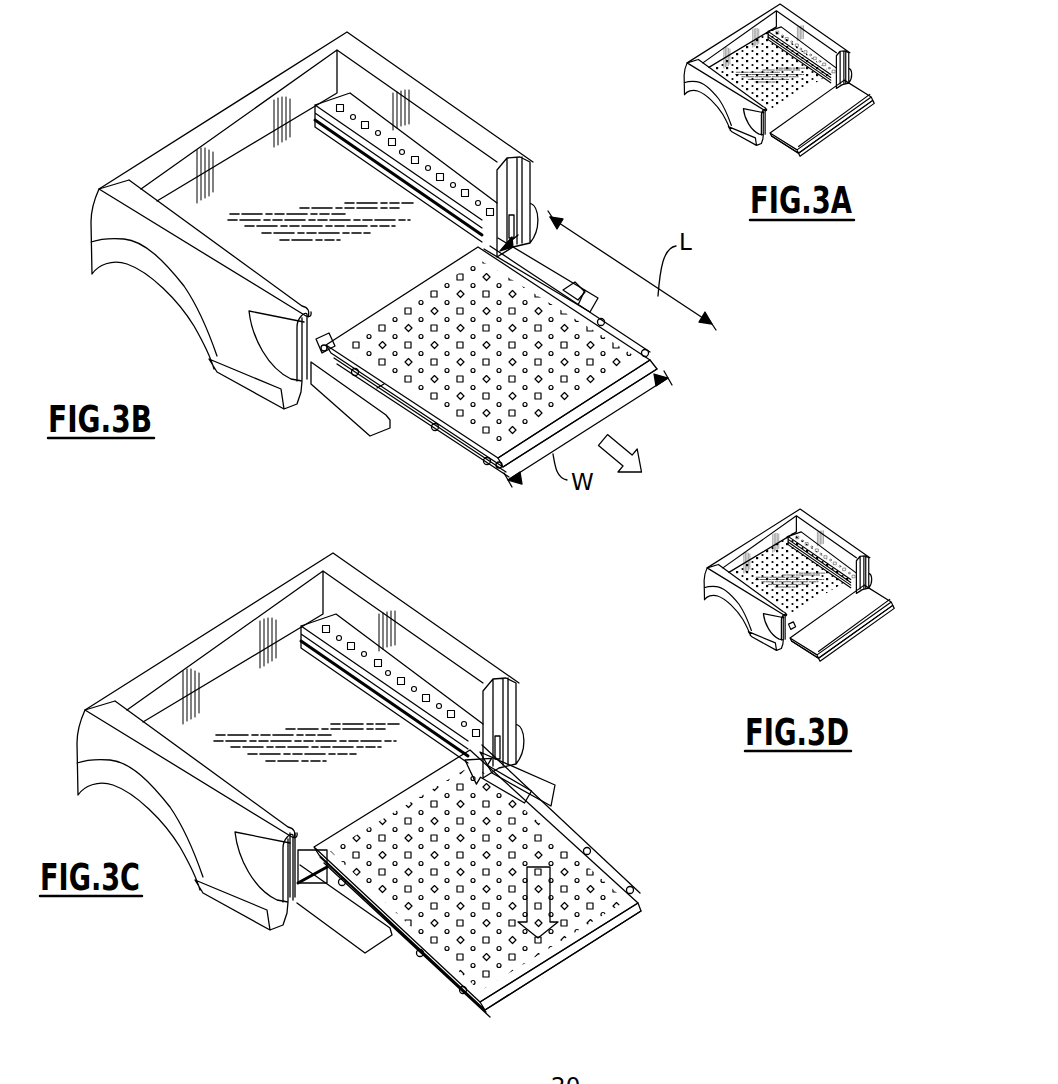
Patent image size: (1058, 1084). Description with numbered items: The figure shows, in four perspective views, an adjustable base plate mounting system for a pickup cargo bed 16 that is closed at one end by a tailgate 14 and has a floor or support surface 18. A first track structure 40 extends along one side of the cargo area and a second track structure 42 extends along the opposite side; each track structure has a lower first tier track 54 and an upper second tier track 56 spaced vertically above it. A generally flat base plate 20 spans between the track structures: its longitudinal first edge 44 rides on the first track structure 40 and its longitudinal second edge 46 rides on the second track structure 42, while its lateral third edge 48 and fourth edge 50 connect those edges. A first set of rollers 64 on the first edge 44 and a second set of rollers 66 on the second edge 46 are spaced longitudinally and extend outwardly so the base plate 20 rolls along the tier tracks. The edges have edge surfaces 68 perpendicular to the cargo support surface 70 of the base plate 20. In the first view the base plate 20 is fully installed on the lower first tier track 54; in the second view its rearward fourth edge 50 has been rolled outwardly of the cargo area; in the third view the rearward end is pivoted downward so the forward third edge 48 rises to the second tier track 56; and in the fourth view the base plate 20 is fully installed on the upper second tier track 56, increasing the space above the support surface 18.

In FIG. 3B, the tailgate 14 is at (348, 392).
In FIG. 3C, the tailgate 14 is at (549, 802).
In FIG. 3A, the tailgate 14 is at (848, 98).
In FIG. 3D, the tailgate 14 is at (858, 612).
In FIG. 3B, the cargo bed 16 is at (112, 231).
In FIG. 3C, the cargo bed 16 is at (161, 815).
In FIG. 3A, the cargo bed 16 is at (692, 77).
In FIG. 3D, the cargo bed 16 is at (710, 582).
In FIG. 3B, the floor/support surface 18 is at (274, 198).
In FIG. 3C, the floor/support surface 18 is at (302, 657).
In FIG. 3B, the base plate 20 is at (540, 214).
In FIG. 3C, the base plate 20 is at (571, 840).
In FIG. 3A, the base plate 20 is at (805, 102).
In FIG. 3D, the base plate 20 is at (782, 552).
In FIG. 3B, the first track structure 40 is at (297, 329).
In FIG. 3A, the first track structure 40 is at (777, 125).
In FIG. 3B, the second track structure 42 is at (458, 185).
In FIG. 3C, the second track structure 42 is at (392, 678).
In FIG. 3A, the second track structure 42 is at (818, 52).
In FIG. 3B, the first edge 44 is at (424, 418).
In FIG. 3C, the first edge 44 is at (406, 940).
In FIG. 3B, the second edge 46 is at (600, 318).
In FIG. 3C, the second edge 46 is at (622, 877).
In FIG. 3B, the third edge 48 is at (427, 273).
In FIG. 3C, the third edge 48 is at (414, 785).
In FIG. 3B, the fourth edge 50 is at (658, 366).
In FIG. 3C, the fourth edge 50 is at (636, 917).
In FIG. 3B, the first tier track 54 is at (473, 228).
In FIG. 3C, the first tier track 54 is at (396, 772).
In FIG. 3B, the second tier track 56 is at (406, 160).
In FIG. 3C, the second tier track 56 is at (405, 721).
In FIG. 3D, the second tier track 56 is at (853, 592).
In FIG. 3B, the first set of rollers 64 is at (480, 460).
In FIG. 3C, the first set of rollers 64 is at (463, 990).
In FIG. 3B, the second set of rollers 66 is at (648, 350).
In FIG. 3C, the second set of rollers 66 is at (590, 848).
In FIG. 3B, the edge surfaces 68 is at (563, 290).
In FIG. 3B, the cargo support surface 70 is at (500, 473).